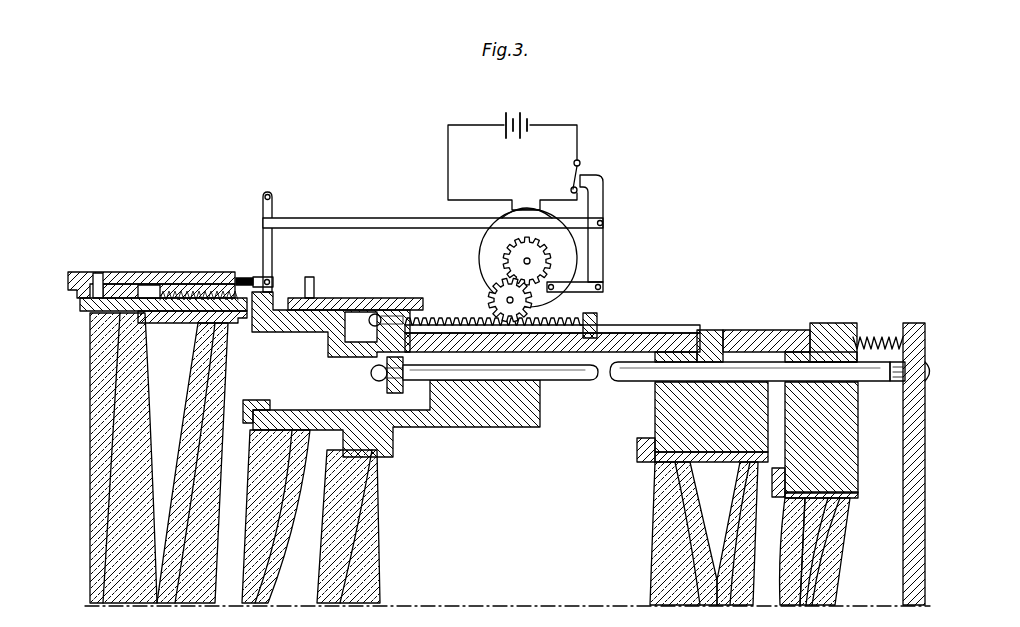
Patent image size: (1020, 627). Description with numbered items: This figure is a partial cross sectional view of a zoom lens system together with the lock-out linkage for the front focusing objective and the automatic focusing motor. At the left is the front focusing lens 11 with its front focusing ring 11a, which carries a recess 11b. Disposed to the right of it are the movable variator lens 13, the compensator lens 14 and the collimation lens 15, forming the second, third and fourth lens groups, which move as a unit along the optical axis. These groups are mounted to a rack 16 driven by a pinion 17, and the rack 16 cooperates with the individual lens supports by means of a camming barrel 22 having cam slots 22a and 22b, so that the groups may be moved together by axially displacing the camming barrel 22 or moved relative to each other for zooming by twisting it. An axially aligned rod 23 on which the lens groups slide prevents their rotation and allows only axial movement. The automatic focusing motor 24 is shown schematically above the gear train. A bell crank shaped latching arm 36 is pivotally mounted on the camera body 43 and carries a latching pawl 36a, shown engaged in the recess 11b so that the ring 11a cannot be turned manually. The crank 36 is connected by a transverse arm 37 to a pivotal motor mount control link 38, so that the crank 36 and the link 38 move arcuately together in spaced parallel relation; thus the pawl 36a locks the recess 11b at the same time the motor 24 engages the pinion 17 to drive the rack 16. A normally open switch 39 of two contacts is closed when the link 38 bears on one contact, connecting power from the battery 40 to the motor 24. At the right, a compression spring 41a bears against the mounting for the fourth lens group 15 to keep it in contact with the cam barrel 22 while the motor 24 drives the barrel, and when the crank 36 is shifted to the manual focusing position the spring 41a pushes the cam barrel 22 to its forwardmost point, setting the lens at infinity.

The front focusing lens 11 is at (90, 408).
The front focusing ring 11a is at (150, 272).
The recess 11b is at (240, 276).
The variator lens 13 is at (393, 457).
The compensator lens 14 is at (650, 450).
The collimation lens 15 is at (858, 497).
The rack 16 is at (575, 313).
The pinion 17 is at (490, 291).
The camming barrel 22 is at (773, 330).
The cam slot 22a is at (487, 314).
The cam slot 22b is at (718, 330).
The axially aligned rod 23 is at (570, 383).
The automatic focusing motor 24 is at (479, 252).
The latching arm 36 is at (272, 200).
The latching pawl 36a is at (250, 276).
The transverse arm 37 is at (405, 218).
The motor mount control link 38 is at (603, 195).
The switch 39 is at (583, 170).
The battery 40 is at (526, 116).
The spring 41a is at (884, 337).
The camera body 43 is at (940, 305).